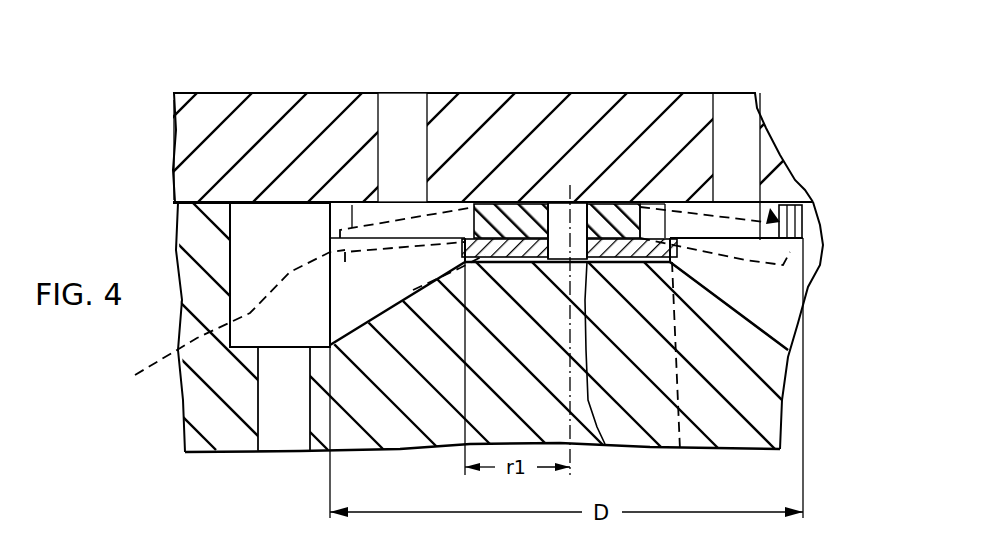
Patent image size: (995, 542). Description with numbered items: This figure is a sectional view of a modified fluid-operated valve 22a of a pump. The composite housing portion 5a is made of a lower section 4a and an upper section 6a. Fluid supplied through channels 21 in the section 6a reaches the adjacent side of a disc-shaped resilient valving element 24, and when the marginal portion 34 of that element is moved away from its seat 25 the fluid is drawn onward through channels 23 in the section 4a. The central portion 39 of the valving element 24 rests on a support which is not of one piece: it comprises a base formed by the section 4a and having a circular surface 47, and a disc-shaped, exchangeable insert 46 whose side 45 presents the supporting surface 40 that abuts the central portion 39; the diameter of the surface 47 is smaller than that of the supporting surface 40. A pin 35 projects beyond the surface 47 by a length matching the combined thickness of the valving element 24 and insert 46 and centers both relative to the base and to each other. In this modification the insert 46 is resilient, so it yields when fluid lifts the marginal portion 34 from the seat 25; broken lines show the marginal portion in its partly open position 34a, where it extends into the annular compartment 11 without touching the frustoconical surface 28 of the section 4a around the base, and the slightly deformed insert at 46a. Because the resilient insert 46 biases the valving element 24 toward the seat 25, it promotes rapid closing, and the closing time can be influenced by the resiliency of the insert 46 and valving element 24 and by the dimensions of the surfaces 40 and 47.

The section 4a is at (222, 433).
The housing portion 5a is at (157, 222).
The section 6a is at (222, 108).
The annular compartment 11 is at (290, 327).
The channels 21 is at (720, 110).
The fluid-operated valve 22a is at (505, 192).
The channels 23 is at (288, 437).
The valving element 24 is at (350, 196).
The seat 25 is at (777, 240).
The frustoconical surface 28 is at (742, 318).
The marginal portion 34 is at (325, 225).
The position of marginal portion 34a is at (218, 327).
The pin 35 is at (577, 202).
The central portion 39 is at (604, 190).
The supporting surface 40 is at (493, 203).
The side of insert 45 is at (642, 215).
The insert 46 is at (512, 262).
The deformed position of insert 46a is at (537, 372).
The circular surface 47 is at (557, 202).